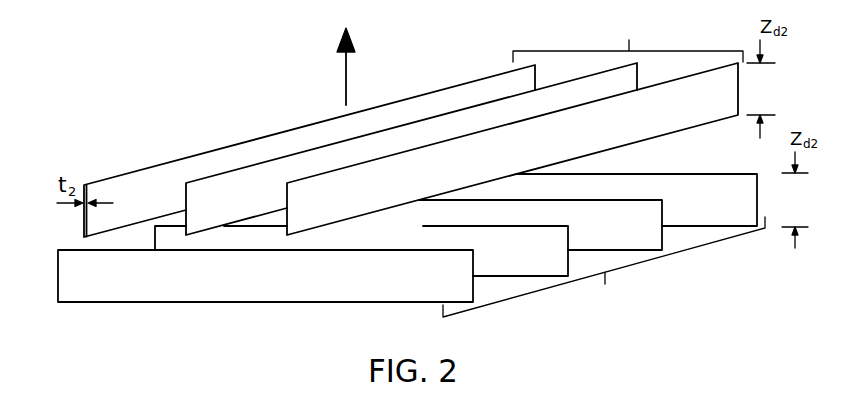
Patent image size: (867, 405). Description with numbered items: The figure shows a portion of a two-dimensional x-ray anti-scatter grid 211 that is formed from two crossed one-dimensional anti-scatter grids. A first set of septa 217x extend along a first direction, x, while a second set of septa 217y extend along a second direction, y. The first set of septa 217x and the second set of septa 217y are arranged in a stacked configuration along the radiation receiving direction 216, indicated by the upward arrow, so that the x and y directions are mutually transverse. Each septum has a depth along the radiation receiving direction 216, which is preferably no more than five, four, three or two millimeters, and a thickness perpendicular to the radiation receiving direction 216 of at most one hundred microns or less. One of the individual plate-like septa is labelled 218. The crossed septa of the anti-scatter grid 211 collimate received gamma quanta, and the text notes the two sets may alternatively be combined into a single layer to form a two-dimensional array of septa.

The 2D x-ray anti-scatter grid 211 is at (280, 105).
The radiation receiving direction 216 is at (370, 66).
The second set of septa 217y is at (628, 39).
The first set of septa 217x is at (604, 269).
The conductive strip 218 is at (178, 219).